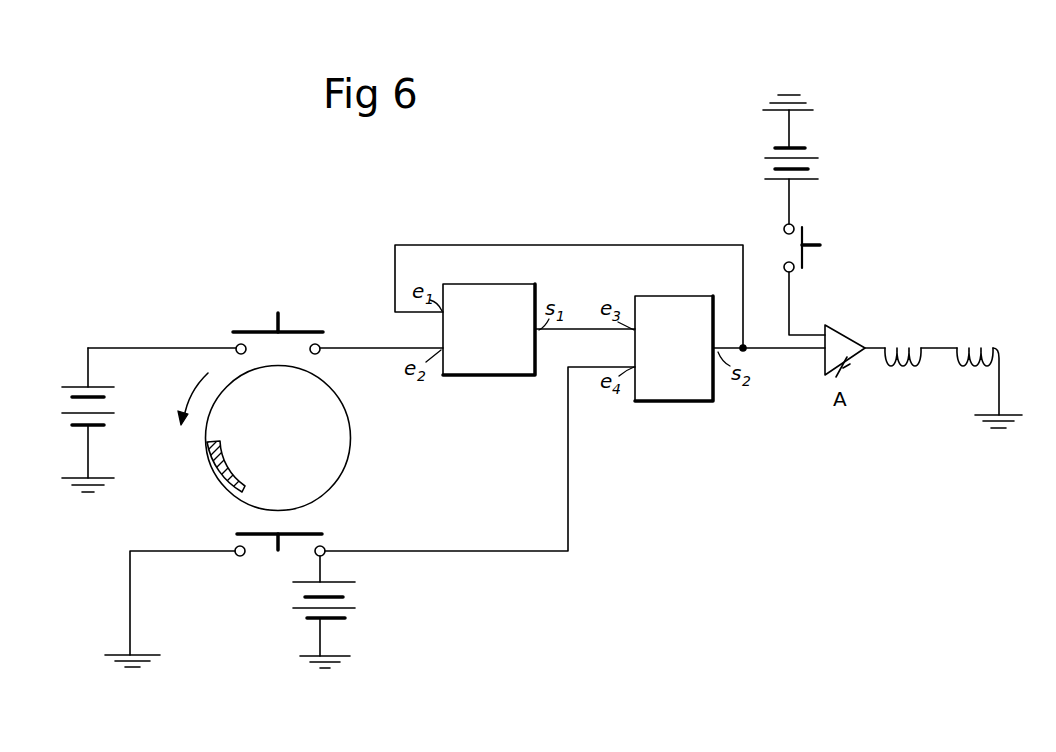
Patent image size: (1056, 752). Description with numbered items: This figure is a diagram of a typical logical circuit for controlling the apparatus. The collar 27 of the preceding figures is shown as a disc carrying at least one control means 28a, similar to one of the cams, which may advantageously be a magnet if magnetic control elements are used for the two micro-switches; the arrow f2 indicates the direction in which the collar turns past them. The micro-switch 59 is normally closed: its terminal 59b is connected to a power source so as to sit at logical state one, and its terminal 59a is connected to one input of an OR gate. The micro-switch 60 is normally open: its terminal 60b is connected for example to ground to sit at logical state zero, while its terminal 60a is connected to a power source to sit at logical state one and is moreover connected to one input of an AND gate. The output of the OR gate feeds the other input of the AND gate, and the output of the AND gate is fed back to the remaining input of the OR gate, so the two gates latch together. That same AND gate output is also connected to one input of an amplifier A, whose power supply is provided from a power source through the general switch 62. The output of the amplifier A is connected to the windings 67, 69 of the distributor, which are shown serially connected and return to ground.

The micro-switch 59 is at (290, 328).
The terminal of micro-switch 59 59a is at (319, 354).
The terminal of micro-switch 59 59b is at (237, 345).
The micro-switch 60 is at (305, 533).
The terminal of micro-switch 60 60a is at (325, 553).
The terminal of micro-switch 60 60b is at (236, 556).
The collar 27 is at (342, 440).
The control means 28a is at (214, 467).
The general switch 62 is at (806, 240).
The winding of the distributor 67 is at (920, 317).
The winding of the distributor 69 is at (993, 317).
The rotation direction arrow f2 is at (191, 392).
The amplifier A is at (855, 351).